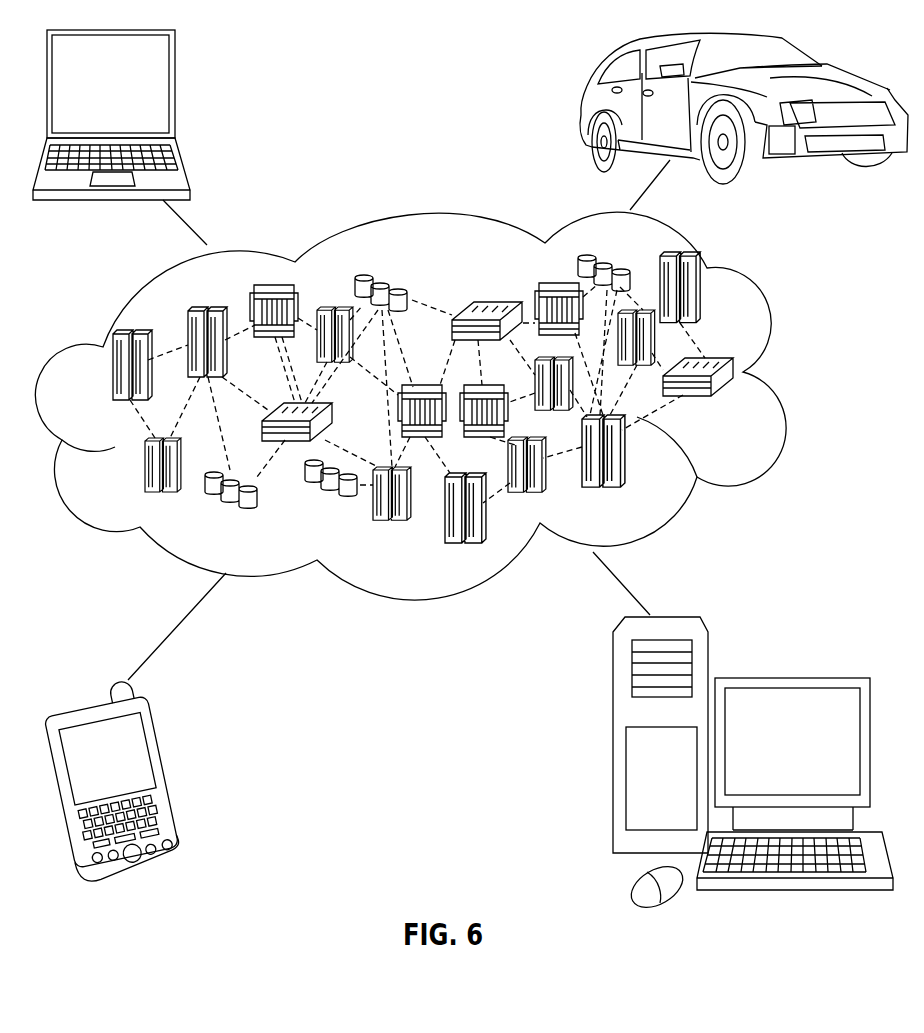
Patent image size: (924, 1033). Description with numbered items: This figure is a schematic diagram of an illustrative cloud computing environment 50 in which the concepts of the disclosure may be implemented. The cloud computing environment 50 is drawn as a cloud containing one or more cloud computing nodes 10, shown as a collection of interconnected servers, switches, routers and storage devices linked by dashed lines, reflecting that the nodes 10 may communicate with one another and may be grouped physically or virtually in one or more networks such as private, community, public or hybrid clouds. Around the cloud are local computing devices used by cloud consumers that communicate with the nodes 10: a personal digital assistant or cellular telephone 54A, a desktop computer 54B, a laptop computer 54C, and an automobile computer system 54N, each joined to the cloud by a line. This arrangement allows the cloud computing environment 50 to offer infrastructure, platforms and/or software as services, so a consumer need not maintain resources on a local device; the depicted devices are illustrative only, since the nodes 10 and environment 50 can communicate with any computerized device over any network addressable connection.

The cloud computing environment 50 is at (793, 377).
The cloud computing nodes 10 is at (738, 412).
The personal digital assistant or cellular telephone 54A is at (167, 773).
The desktop computer 54B is at (790, 675).
The laptop computer 54C is at (177, 92).
The automobile computer system 54N is at (585, 107).